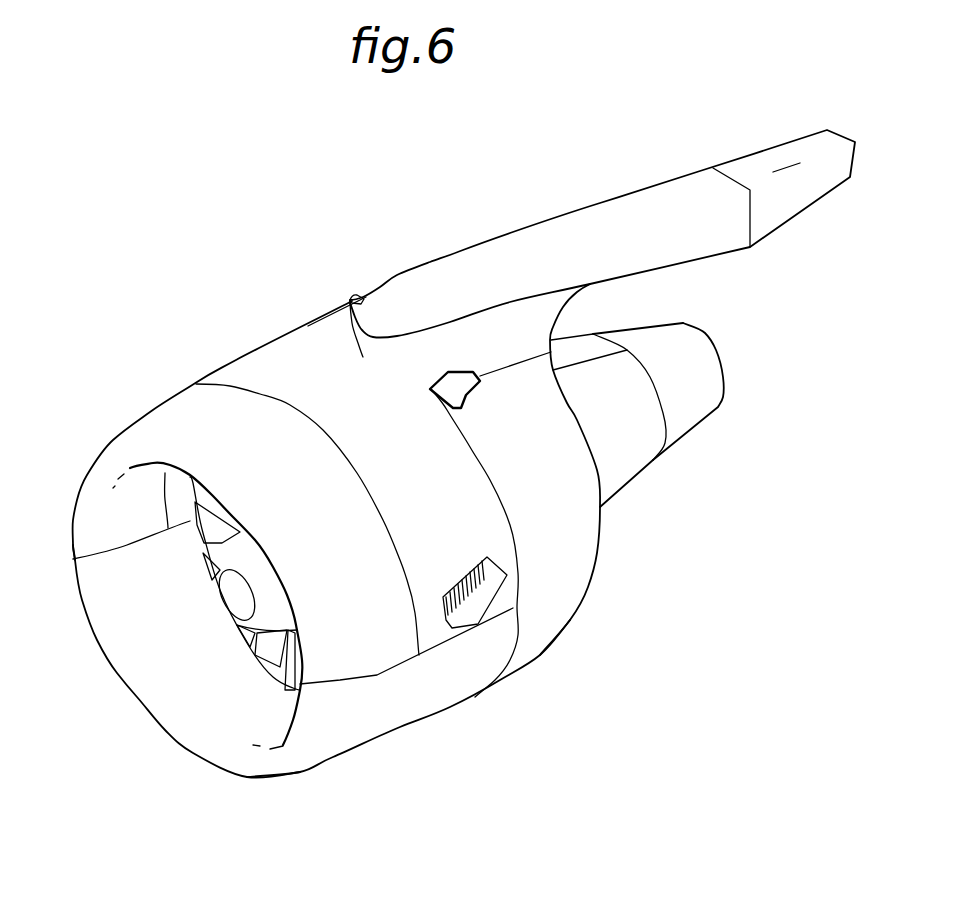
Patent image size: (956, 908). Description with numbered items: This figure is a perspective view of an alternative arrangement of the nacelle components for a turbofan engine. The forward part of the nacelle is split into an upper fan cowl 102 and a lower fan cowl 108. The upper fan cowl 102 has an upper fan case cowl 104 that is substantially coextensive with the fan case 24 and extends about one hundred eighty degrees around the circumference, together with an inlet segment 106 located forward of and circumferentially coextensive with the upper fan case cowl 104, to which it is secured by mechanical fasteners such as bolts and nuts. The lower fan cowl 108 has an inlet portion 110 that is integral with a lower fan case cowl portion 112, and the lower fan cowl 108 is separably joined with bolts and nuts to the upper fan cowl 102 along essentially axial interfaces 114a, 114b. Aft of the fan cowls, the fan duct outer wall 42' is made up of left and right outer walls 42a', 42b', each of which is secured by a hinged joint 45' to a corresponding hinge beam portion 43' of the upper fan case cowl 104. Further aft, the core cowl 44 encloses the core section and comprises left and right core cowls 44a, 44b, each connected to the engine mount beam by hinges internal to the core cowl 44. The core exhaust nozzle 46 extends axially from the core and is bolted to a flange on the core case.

The fan case 24 is at (480, 597).
The fan duct outer wall 42' is at (386, 522).
The left outer wall 42a' is at (617, 469).
The right outer wall 42b' is at (309, 289).
The hinge beam portion 43' is at (602, 234).
The core cowl 44 is at (653, 459).
The left core cowl 44a is at (612, 472).
The right core cowl 44b is at (595, 343).
The hinged joint 45' is at (447, 377).
The core exhaust nozzle 46 is at (692, 368).
The upper fan cowl 102 is at (157, 427).
The upper fan case cowl 104 is at (422, 484).
The inlet segment 106 is at (299, 507).
The lower fan cowl 108 is at (310, 752).
The inlet portion 110 is at (177, 703).
The lower fan case cowl portion 112 is at (443, 697).
The axial interface 114a is at (383, 675).
The axial interface 114b is at (135, 544).